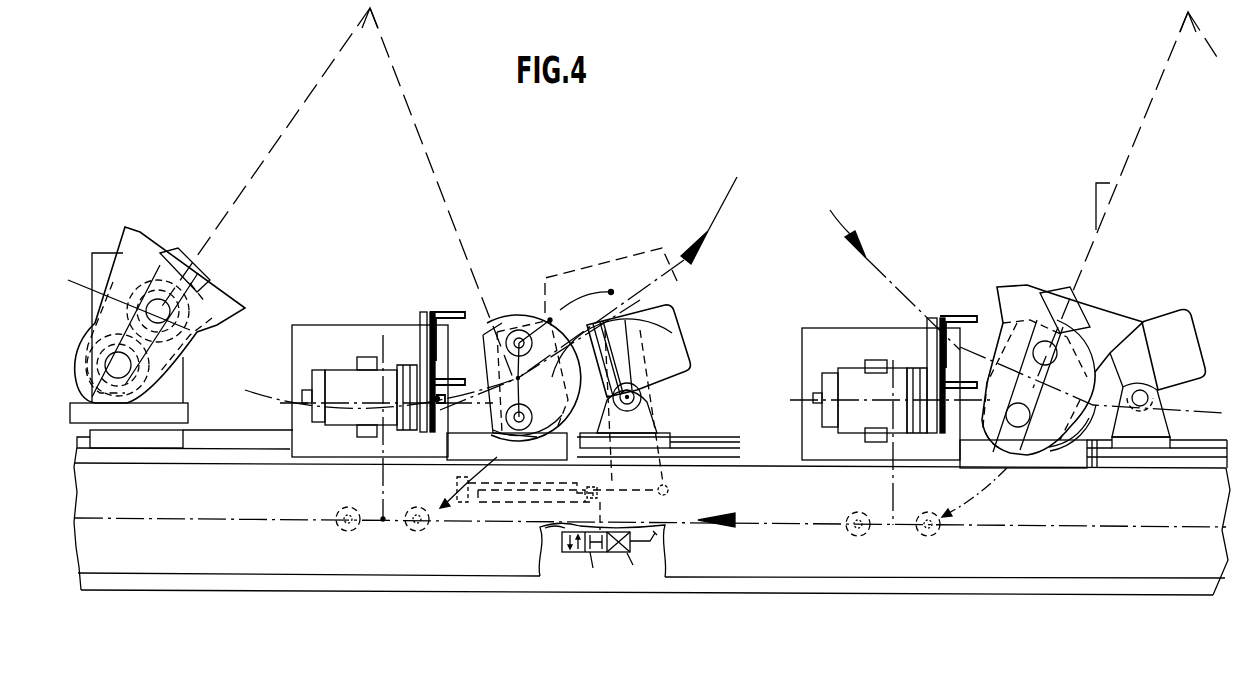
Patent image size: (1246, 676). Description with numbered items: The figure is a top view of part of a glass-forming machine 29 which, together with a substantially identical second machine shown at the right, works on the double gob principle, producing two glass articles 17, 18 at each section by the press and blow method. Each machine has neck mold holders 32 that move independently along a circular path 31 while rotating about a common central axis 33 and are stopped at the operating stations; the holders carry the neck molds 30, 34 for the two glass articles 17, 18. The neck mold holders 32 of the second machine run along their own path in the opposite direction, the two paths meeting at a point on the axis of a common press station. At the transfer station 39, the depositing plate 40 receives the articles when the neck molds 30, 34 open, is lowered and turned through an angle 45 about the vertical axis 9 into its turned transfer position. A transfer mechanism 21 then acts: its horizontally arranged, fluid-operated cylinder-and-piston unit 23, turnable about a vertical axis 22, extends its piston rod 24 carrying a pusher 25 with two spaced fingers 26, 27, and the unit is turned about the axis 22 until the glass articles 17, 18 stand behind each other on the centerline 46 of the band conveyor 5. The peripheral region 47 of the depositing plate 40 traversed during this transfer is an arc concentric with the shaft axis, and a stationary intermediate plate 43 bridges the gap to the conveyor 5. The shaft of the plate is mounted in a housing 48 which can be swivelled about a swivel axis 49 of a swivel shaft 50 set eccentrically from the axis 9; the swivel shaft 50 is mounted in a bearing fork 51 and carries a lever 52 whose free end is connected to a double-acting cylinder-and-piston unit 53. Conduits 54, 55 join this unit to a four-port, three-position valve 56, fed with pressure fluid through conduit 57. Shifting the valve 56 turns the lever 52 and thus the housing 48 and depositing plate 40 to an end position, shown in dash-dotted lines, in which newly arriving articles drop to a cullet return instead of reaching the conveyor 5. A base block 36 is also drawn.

The band conveyor 5 is at (479, 576).
The vertical axis 9 is at (521, 381).
The glass article 17 is at (532, 430).
The glass article 18 is at (512, 335).
The transfer mechanism 21 is at (431, 305).
The vertical axis 22 is at (384, 388).
The cylinder-and-piston unit 23 is at (334, 372).
The piston rod 24 is at (440, 402).
The pusher 25 is at (421, 312).
The finger 26 is at (457, 379).
The finger 27 is at (445, 311).
The glass-forming machine 29 is at (720, 318).
The neck mold 30 is at (180, 384).
The circular path 31 is at (680, 267).
The neck mold holder 32 is at (208, 326).
The central axis 33 is at (370, 16).
The neck mold 34 is at (176, 333).
The base block 36 is at (107, 452).
The transfer station 39 is at (523, 310).
The depositing plate 40 is at (490, 335).
The intermediate plate 43 is at (564, 452).
The angle 45 is at (1105, 184).
The centerline 46 is at (790, 527).
The peripheral region 47 is at (538, 315).
The housing 48 is at (681, 375).
The swivel axis 49 is at (634, 398).
The swivel shaft 50 is at (631, 391).
The bearing fork 51 is at (657, 420).
The lever 52 is at (668, 487).
The cylinder-and-piston unit 53 is at (498, 461).
The conduit 54 is at (545, 528).
The conduit 55 is at (601, 533).
The four-port/three-position valve 56 is at (627, 553).
The conduit 57 is at (593, 568).